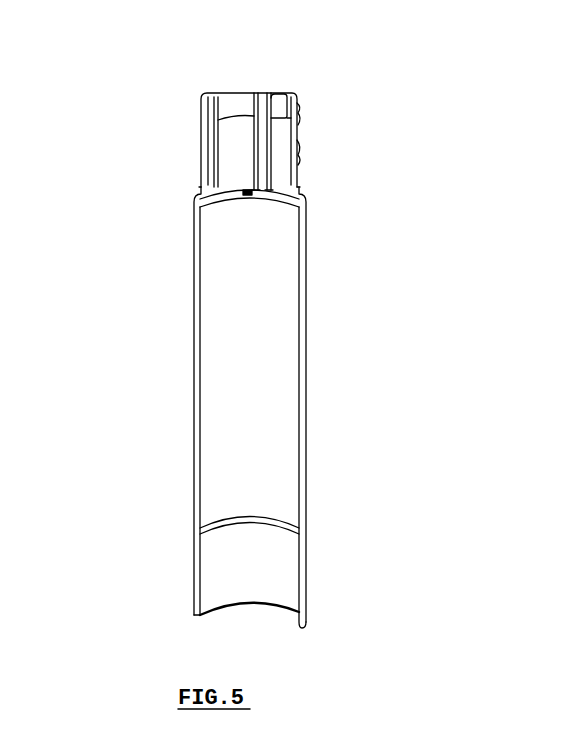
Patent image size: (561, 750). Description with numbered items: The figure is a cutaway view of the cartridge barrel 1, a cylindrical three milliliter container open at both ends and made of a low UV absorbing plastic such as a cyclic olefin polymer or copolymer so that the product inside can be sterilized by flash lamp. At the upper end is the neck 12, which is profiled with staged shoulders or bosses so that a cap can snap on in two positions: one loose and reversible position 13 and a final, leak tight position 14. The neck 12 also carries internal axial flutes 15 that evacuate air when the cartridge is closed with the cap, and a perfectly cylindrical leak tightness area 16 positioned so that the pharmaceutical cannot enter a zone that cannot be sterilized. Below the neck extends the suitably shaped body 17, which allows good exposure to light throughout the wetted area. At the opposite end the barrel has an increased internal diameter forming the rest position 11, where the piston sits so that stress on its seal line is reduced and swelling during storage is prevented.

The cartridge barrel 1 is at (362, 347).
The rest position 11 is at (238, 588).
The neck 12 is at (202, 139).
The loose and reversible position 13 is at (302, 113).
The final and leak tight position 14 is at (300, 154).
The internal axial flutes 15 is at (265, 93).
The cylindrical leak tightness area 16 is at (200, 198).
The body 17 is at (228, 346).